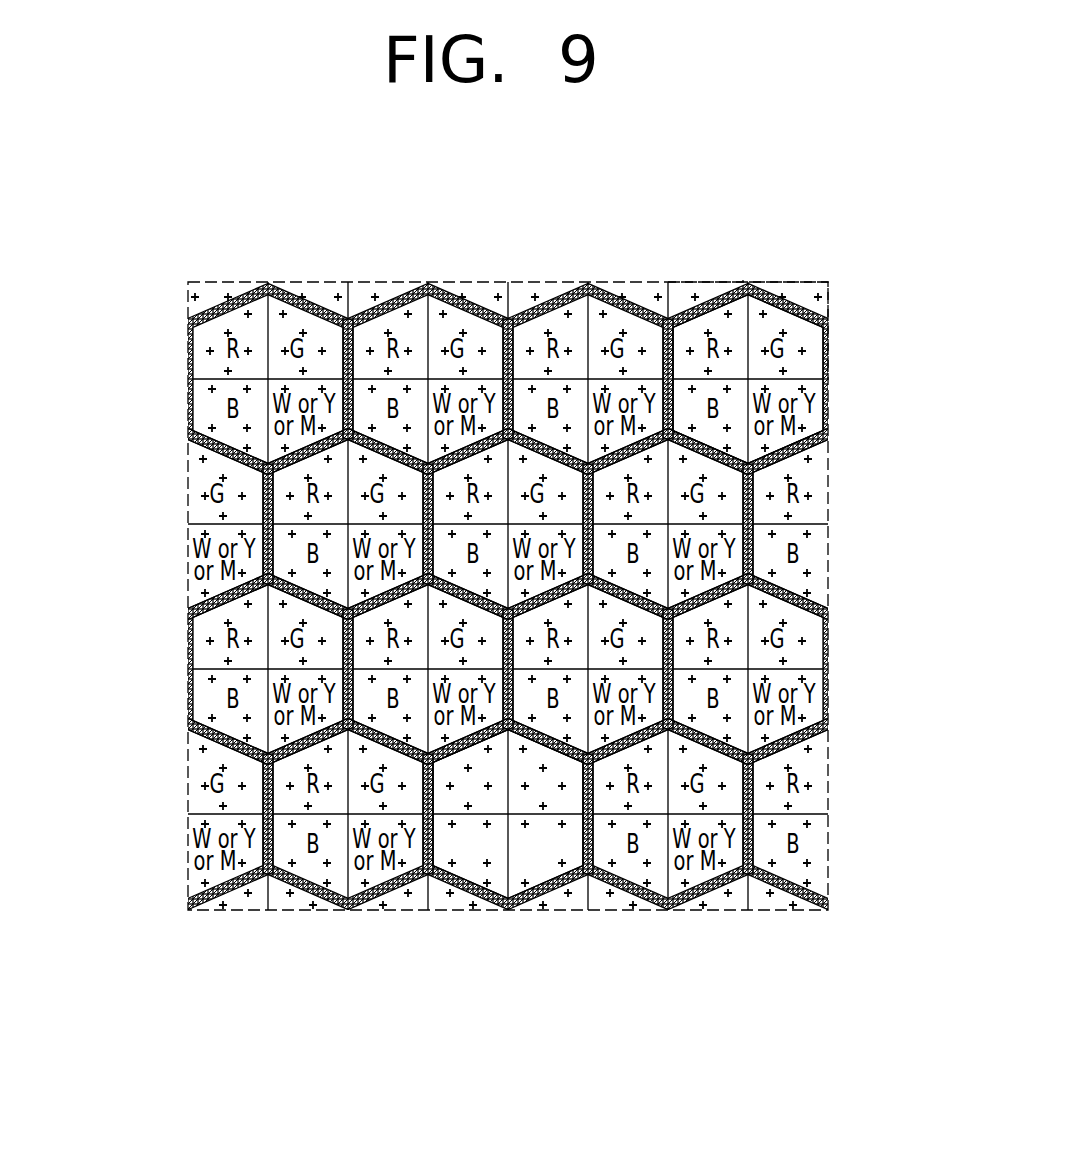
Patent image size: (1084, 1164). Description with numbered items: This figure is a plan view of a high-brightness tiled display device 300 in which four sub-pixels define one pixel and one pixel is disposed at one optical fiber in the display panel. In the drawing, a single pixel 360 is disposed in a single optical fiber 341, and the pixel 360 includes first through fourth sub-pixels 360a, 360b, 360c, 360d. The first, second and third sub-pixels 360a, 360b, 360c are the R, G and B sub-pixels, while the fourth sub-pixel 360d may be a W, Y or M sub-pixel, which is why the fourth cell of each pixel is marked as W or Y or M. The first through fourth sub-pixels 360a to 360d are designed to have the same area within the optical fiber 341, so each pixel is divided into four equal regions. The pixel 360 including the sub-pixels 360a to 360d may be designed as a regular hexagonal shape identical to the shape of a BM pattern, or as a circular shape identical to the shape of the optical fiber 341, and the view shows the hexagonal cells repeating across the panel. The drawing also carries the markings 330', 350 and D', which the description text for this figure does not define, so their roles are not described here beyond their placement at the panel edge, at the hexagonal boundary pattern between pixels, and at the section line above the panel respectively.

The high-brightness tiled display device 300 is at (160, 265).
The substrate 330' is at (801, 331).
The optical fiber 341 is at (793, 370).
The partition wall (black matrix) 350 is at (765, 474).
The pixel 360 is at (627, 1005).
The first sub-pixel 360a is at (462, 798).
The second sub-pixel 360b is at (547, 798).
The third sub-pixel 360c is at (485, 865).
The fourth sub-pixel 360d is at (527, 878).
The section line D' is at (745, 234).